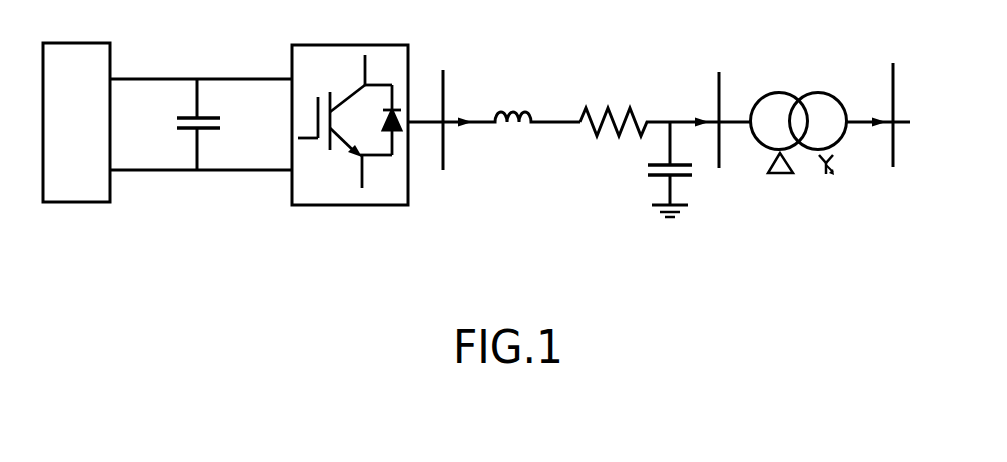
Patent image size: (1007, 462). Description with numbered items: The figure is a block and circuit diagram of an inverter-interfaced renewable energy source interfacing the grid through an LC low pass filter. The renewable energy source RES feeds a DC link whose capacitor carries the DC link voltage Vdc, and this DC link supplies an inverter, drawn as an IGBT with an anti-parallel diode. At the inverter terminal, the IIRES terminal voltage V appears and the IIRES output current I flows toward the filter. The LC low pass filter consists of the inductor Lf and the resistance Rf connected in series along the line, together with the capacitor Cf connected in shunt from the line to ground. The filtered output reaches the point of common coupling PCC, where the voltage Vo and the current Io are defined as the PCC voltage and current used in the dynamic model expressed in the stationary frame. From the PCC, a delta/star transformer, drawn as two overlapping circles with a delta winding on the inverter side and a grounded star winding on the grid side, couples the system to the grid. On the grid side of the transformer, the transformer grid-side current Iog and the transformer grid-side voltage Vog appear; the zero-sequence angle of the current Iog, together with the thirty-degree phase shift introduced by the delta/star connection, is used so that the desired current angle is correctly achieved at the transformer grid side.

The renewable energy source RES is at (76, 122).
The DC link voltage Vdc is at (238, 83).
The IIRES terminal voltage V is at (440, 102).
The IIRES output current I is at (446, 104).
The inductor of the LC low pass filter Lf is at (532, 96).
The resistance of the LC low pass filter Rf is at (625, 103).
The capacitor of the LC low pass filter Cf is at (647, 169).
The current at the point of common coupling Io is at (710, 103).
The voltage at the point of common coupling Vo is at (717, 103).
The point of common coupling PCC is at (726, 188).
The transformer grid-side current Iog is at (878, 104).
The transformer grid-side voltage Vog is at (898, 102).